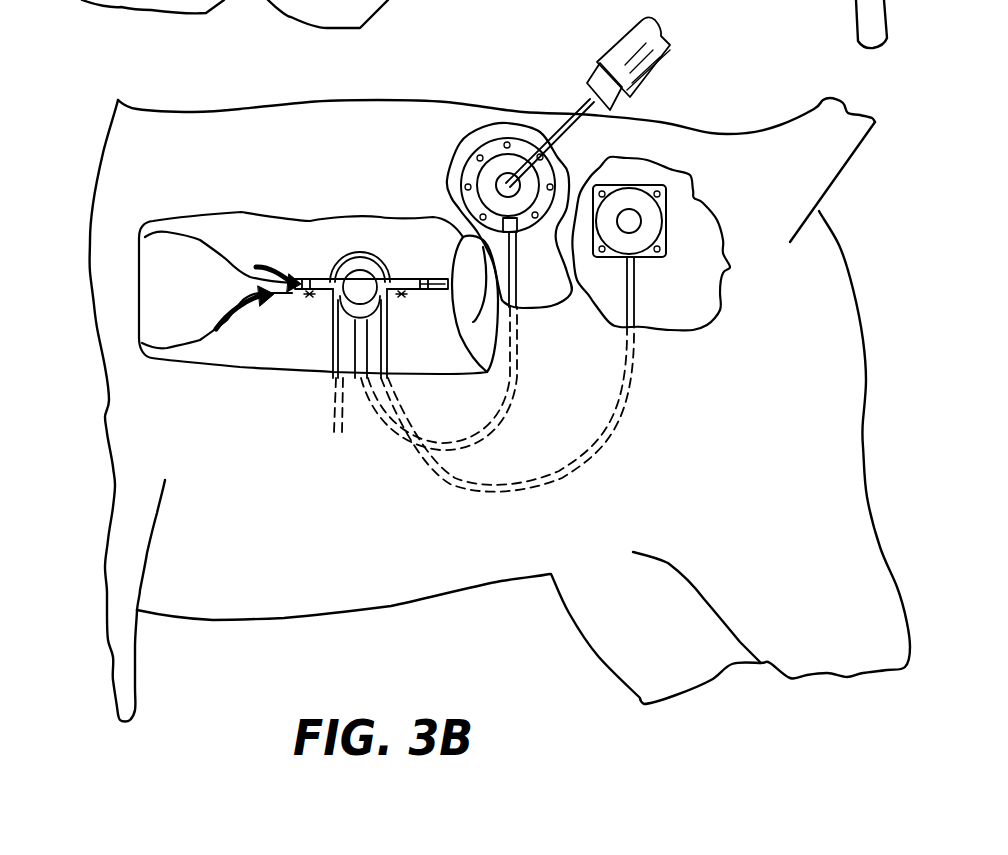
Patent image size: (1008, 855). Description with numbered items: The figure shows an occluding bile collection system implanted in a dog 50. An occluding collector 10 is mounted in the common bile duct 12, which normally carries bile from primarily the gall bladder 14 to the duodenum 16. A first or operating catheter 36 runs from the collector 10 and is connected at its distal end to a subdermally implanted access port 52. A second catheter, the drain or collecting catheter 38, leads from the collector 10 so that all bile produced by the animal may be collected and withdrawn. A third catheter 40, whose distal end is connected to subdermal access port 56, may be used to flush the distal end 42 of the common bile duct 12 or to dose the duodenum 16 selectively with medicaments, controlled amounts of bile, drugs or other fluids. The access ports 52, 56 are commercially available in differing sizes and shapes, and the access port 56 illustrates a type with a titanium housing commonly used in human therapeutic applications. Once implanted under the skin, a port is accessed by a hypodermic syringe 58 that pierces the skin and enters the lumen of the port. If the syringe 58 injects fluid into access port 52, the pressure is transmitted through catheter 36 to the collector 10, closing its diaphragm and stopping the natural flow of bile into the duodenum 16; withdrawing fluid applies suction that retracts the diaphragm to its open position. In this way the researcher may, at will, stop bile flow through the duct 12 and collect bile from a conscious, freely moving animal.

The occluding collector 10 is at (351, 252).
The duct 12 is at (291, 277).
The gall bladder 14 is at (185, 232).
The duodenum 16 is at (456, 246).
The first catheter 36 is at (520, 259).
The second catheter 38 is at (333, 340).
The third catheter 40 is at (387, 328).
The distal end of the common bile duct 42 is at (436, 277).
The dog 50 is at (265, 622).
The access port 52 is at (492, 138).
The access port 56 is at (667, 210).
The syringe 58 is at (549, 130).